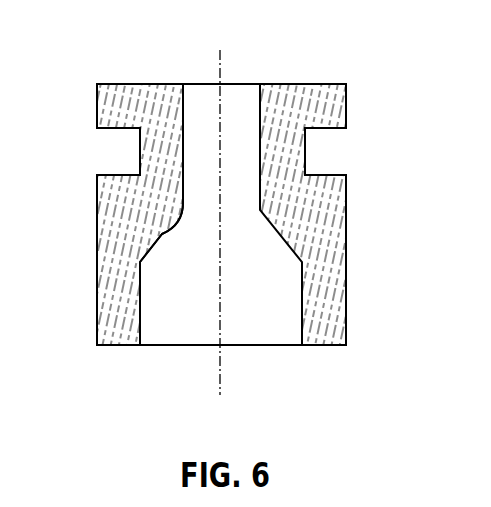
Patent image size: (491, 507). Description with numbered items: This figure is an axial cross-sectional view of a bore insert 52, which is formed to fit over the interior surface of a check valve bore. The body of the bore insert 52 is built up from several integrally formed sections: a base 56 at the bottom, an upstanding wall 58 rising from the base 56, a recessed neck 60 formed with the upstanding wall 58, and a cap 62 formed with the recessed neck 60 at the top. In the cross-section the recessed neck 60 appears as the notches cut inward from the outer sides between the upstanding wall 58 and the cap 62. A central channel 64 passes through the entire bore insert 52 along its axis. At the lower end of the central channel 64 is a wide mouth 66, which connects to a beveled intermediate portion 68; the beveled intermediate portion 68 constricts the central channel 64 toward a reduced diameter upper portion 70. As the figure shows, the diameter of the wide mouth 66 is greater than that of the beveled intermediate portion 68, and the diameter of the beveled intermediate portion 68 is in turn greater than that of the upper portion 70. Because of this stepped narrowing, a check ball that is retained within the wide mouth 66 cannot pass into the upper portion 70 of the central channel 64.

The bore insert 52 is at (227, 215).
The base 56 is at (313, 339).
The upstanding wall 58 is at (342, 230).
The recessed neck 60 is at (305, 146).
The cap 62 is at (331, 84).
The central channel 64 is at (200, 126).
The wide mouth 66 is at (173, 333).
The beveled intermediate portion 68 is at (162, 236).
The upper portion 70 is at (237, 160).